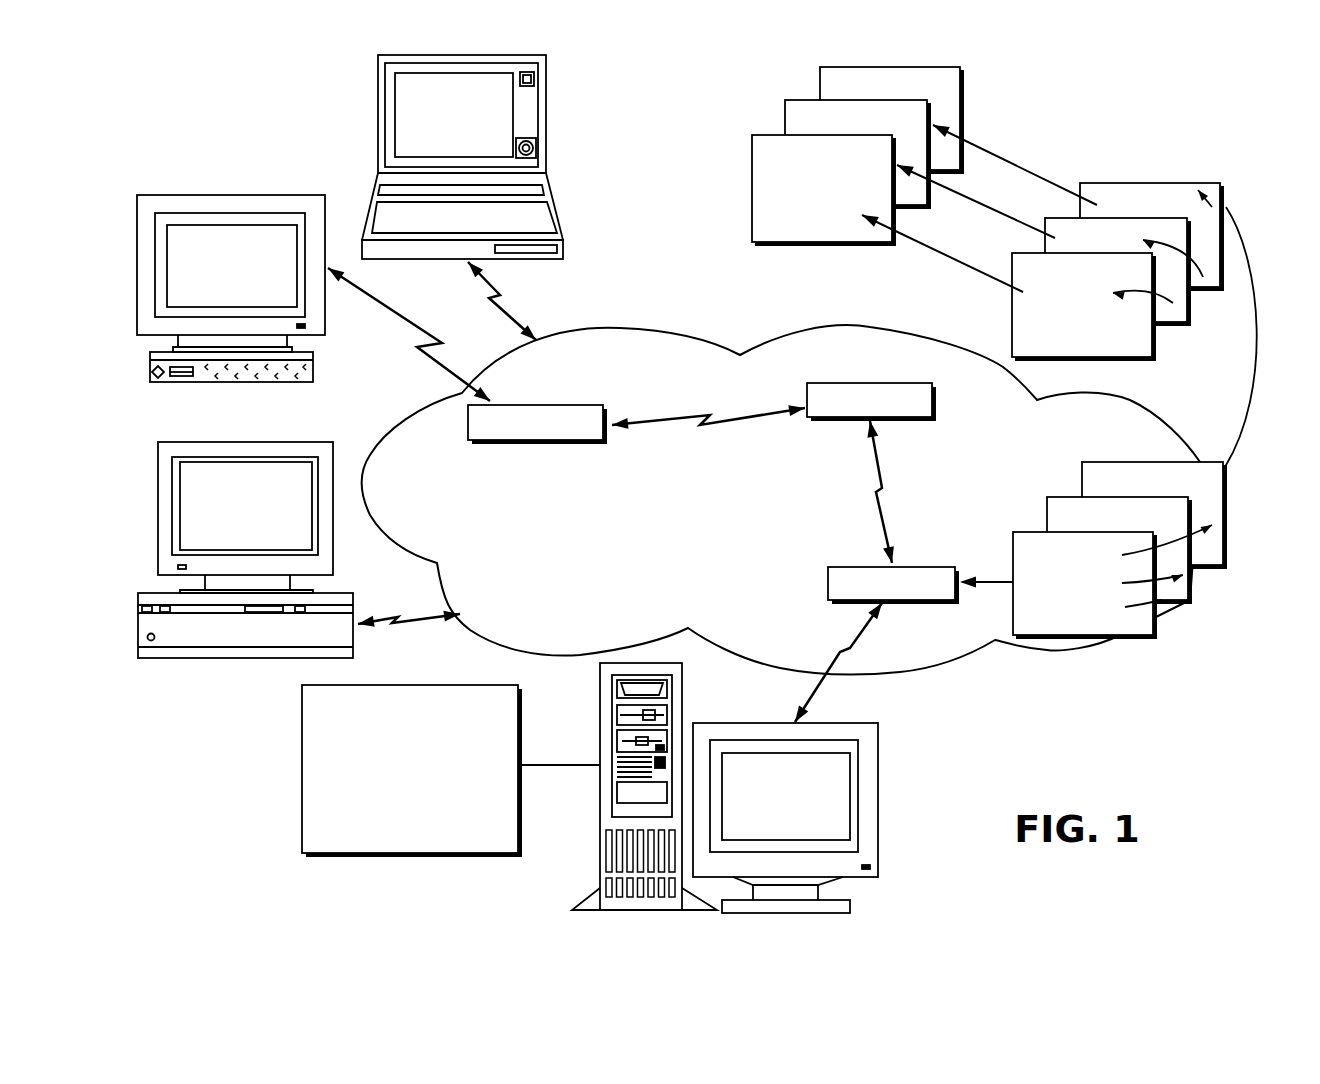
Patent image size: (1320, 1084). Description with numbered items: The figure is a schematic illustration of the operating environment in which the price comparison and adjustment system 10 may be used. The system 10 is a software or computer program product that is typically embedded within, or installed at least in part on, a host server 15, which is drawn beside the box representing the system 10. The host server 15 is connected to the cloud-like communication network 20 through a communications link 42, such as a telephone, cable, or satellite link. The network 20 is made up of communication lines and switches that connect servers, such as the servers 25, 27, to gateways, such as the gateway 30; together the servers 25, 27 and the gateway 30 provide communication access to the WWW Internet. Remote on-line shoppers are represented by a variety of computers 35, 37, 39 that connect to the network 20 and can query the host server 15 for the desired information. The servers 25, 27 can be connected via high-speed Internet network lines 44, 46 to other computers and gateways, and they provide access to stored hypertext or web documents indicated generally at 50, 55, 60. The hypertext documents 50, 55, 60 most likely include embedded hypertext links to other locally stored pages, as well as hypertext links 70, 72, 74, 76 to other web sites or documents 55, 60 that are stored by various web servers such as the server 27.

The price comparison and adjustment system 10 is at (301, 742).
The host server 15 is at (598, 708).
The communication network 20 is at (657, 330).
The server 25 is at (871, 566).
The server 27 is at (889, 383).
The gateway 30 is at (538, 446).
The computer 35 is at (558, 207).
The computer 37 is at (293, 194).
The computer 39 is at (295, 441).
The communication link 42 is at (801, 698).
The high-speed Internet network line 44 is at (886, 516).
The high-speed Internet network line 46 is at (695, 416).
The hypertext documents 50 is at (1233, 535).
The hypertext documents 55 is at (1233, 205).
The hypertext documents 60 is at (770, 120).
The hypertext link 70 is at (1257, 378).
The hypertext link 72 is at (1035, 165).
The hypertext link 74 is at (998, 206).
The hypertext link 76 is at (951, 249).